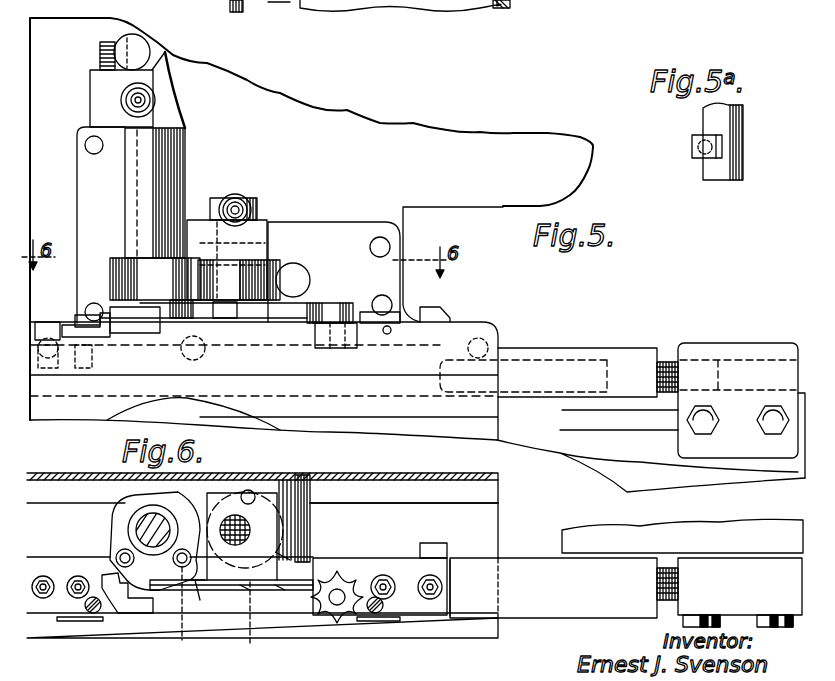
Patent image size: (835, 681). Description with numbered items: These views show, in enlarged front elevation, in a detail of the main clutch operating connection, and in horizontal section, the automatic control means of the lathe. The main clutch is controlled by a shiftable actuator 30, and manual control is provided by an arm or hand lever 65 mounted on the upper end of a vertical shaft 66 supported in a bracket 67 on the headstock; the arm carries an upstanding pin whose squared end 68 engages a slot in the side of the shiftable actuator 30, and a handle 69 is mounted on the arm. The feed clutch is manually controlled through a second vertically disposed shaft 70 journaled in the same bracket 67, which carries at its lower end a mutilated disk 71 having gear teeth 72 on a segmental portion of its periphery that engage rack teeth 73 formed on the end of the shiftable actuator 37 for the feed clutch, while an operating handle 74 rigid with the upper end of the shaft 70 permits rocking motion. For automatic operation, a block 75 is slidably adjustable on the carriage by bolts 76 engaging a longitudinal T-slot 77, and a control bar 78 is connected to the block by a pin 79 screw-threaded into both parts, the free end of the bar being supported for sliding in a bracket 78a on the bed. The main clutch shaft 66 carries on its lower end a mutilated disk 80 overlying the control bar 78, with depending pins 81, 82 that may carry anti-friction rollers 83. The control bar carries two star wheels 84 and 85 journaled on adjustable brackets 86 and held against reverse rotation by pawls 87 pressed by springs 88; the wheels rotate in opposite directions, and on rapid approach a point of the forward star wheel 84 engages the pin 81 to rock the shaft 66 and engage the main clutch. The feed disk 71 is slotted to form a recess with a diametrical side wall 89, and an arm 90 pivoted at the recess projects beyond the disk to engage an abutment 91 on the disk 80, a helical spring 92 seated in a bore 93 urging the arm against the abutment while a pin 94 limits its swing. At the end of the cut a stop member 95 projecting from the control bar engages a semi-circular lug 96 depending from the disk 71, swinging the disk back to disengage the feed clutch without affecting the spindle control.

In FIG. 5, the shiftable actuator 30 is at (140, 42).
In FIG. 5A, the shiftable actuator 30 is at (743, 118).
In FIG. 5, the shiftable actuator 37 is at (310, 278).
In FIG. 6, the shiftable actuator 37 is at (312, 493).
In FIG. 5, the arm or hand lever 65 is at (170, 58).
In FIG. 5, the vertical shaft 66 is at (188, 141).
In FIG. 6, the vertical shaft 66 is at (140, 520).
In FIG. 5, the bracket 67 is at (95, 213).
In FIG. 5, the squared end of upstanding pin 68 is at (100, 47).
In FIG. 5A, the squared end of upstanding pin 68 is at (692, 141).
In FIG. 5, the handle 69 is at (153, 95).
In FIG. 5, the vertically disposed shaft 70 is at (268, 218).
In FIG. 6, the vertically disposed shaft 70 is at (238, 492).
In FIG. 5, the mutilated disk 71 is at (268, 262).
In FIG. 6, the mutilated disk 71 is at (245, 585).
In FIG. 5, the gear teeth 72 is at (283, 270).
In FIG. 6, the gear teeth 72 is at (280, 585).
In FIG. 6, the rack teeth 73 is at (275, 553).
In FIG. 5, the operating handle 74 is at (245, 196).
In FIG. 5, the block 75 is at (735, 433).
In FIG. 6, the block 75 is at (720, 560).
In FIG. 5, the bolts 76 is at (760, 420).
In FIG. 6, the bolts 76 is at (703, 615).
In FIG. 5, the T-slot 77 is at (625, 425).
In FIG. 5, the control bar 78 is at (610, 346).
In FIG. 6, the control bar 78 is at (520, 558).
In FIG. 5, the bracket 78a is at (468, 377).
In FIG. 6, the bracket 78a is at (455, 630).
In FIG. 5, the pin 79 is at (664, 360).
In FIG. 6, the pin 79 is at (665, 568).
In FIG. 5, the mutilated disk 80 is at (110, 265).
In FIG. 6, the mutilated disk 80 is at (118, 535).
In FIG. 5, the pin 81 is at (112, 305).
In FIG. 6, the pin 81 is at (116, 555).
In FIG. 5, the pin 82 is at (200, 345).
In FIG. 6, the pin 82 is at (178, 570).
In FIG. 5, the anti-friction rollers 83 is at (190, 312).
In FIG. 6, the anti-friction rollers 83 is at (196, 600).
In FIG. 5, the star wheel 84 is at (152, 335).
In FIG. 6, the star wheel 84 is at (128, 613).
In FIG. 5, the star wheel 85 is at (330, 305).
In FIG. 6, the star wheel 85 is at (330, 618).
In FIG. 5, the adjustable brackets 86 is at (77, 333).
In FIG. 6, the adjustable brackets 86 is at (38, 556).
In FIG. 5, the pawls 87 is at (82, 317).
In FIG. 6, the pawls 87 is at (98, 615).
In FIG. 5, the springs 88 is at (105, 338).
In FIG. 6, the springs 88 is at (85, 622).
In FIG. 5, the side wall 89 is at (202, 235).
In FIG. 6, the side wall 89 is at (252, 600).
In FIG. 6, the arm 90 is at (242, 515).
In FIG. 6, the abutment 91 is at (190, 582).
In FIG. 6, the helical spring 92 is at (286, 482).
In FIG. 6, the bore 93 is at (303, 478).
In FIG. 6, the pin 94 is at (240, 494).
In FIG. 5, the stop member 95 is at (437, 312).
In FIG. 6, the stop member 95 is at (445, 548).
In FIG. 5, the semi-circular lug 96 is at (237, 313).